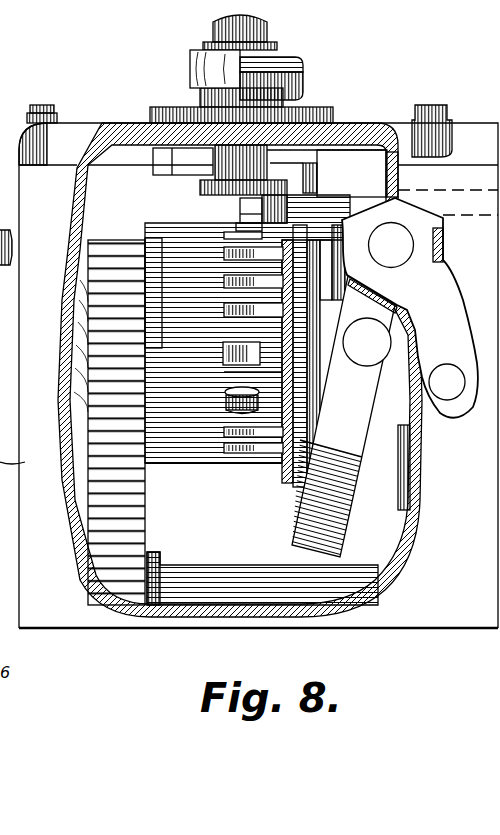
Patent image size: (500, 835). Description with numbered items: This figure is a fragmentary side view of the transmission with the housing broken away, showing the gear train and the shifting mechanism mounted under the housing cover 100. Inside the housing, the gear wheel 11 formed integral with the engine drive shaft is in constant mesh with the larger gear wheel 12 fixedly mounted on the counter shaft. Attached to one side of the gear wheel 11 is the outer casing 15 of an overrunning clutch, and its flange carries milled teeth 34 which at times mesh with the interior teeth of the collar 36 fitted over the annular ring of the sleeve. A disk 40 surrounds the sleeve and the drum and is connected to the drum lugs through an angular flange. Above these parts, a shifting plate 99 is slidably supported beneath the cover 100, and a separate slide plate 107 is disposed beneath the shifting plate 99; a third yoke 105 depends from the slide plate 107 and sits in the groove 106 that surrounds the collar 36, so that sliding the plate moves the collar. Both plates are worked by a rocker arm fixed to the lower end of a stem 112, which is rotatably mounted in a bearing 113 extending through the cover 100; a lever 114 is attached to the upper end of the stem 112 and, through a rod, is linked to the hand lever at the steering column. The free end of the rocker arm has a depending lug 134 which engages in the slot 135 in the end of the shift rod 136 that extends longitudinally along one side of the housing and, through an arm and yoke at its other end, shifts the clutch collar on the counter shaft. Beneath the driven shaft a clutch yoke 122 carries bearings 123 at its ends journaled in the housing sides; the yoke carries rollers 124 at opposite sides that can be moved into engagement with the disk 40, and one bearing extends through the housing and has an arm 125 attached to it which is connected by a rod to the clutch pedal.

The gear wheel 11 is at (70, 306).
The gear wheel 12 is at (137, 537).
The outer casing 15 is at (197, 452).
The teeth 34 is at (263, 456).
The collar 36 is at (246, 381).
The disk 40 is at (398, 482).
The shifting plate 99 is at (353, 152).
The cover 100 is at (372, 125).
The third yoke 105 is at (312, 344).
The groove 106 is at (232, 405).
The slide plate 107 is at (162, 173).
The stem 112 is at (298, 118).
The bearing 113 is at (212, 100).
The lever 114 is at (292, 68).
The clutch yoke 122 is at (342, 534).
The bearings 123 is at (395, 245).
The rollers 124 is at (362, 357).
The arm 125 is at (442, 290).
The lug 134 is at (243, 210).
The slot 135 is at (248, 215).
The shift rod 136 is at (400, 196).